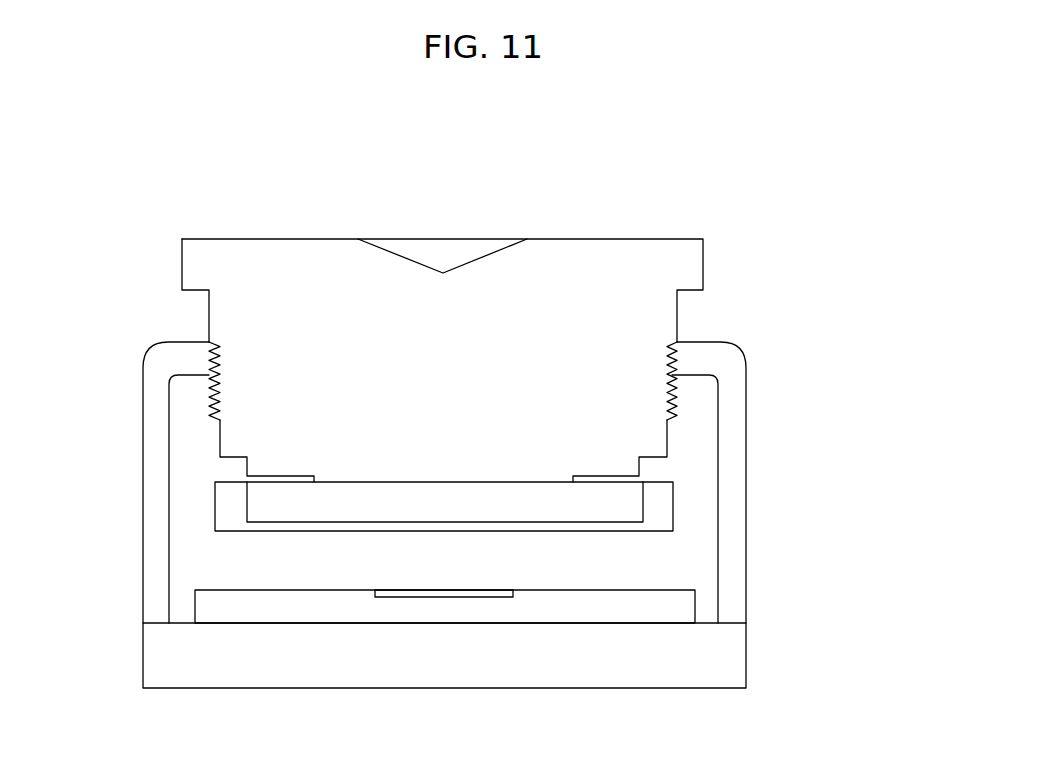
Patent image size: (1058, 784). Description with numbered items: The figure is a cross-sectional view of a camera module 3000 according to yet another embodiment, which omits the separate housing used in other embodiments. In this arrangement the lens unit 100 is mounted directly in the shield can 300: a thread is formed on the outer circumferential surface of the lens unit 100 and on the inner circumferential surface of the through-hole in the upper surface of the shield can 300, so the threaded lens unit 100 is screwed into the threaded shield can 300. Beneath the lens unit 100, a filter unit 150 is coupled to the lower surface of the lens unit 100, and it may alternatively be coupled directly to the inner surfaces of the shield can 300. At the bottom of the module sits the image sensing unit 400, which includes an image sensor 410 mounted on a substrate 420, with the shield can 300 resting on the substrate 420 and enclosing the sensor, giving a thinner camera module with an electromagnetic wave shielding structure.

The camera module 3000 is at (130, 217).
The lens unit 100 is at (677, 265).
The shield can 300 is at (735, 440).
The filter unit 150 is at (642, 502).
The image sensing unit 400 is at (883, 583).
The image sensor 410 is at (680, 597).
The substrate 420 is at (730, 652).